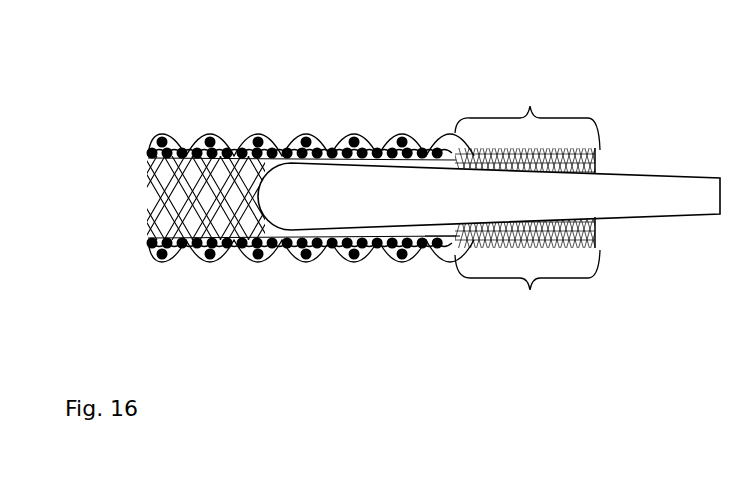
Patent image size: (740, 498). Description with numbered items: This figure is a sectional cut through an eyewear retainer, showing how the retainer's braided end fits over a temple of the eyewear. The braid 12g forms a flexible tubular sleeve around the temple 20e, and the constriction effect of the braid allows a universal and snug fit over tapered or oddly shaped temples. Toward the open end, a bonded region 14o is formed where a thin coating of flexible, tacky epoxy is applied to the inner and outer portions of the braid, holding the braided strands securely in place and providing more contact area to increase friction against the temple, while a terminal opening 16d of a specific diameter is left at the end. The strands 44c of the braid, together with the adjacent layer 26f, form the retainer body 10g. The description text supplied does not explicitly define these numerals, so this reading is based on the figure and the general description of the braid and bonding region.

The medical device / elongate shaft 10g is at (282, 262).
The braided reinforcement layer 12g is at (147, 240).
The mesh sleeve segment 14o is at (530, 106).
The distal edge of sleeve 16d is at (600, 172).
The inner tube / mandrel 20e is at (632, 215).
The wire coil layer 26f is at (432, 255).
The beaded wire strand 44c is at (265, 143).